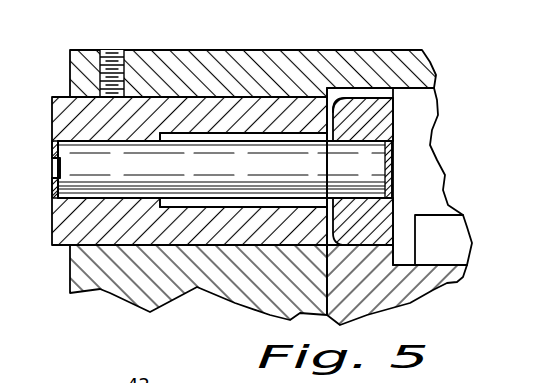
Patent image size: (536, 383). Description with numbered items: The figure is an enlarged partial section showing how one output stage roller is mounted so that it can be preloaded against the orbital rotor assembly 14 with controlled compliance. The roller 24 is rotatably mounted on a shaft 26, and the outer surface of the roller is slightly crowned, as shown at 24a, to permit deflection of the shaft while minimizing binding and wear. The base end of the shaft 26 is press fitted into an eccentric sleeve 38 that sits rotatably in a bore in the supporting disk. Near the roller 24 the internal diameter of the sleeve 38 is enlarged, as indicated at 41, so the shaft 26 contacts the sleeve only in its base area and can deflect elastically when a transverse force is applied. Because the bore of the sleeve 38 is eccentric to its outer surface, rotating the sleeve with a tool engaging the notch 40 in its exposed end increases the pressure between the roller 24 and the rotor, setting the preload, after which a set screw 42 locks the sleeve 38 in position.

The orbital rotor assembly 14 is at (403, 297).
The roller 24 is at (393, 118).
The crowned surface of roller 24a is at (385, 97).
The shaft 26 is at (393, 158).
The eccentric sleeve 38 is at (60, 118).
The notch 40 is at (57, 175).
The enlarged internal diameter 41 is at (247, 128).
The set screw 42 is at (117, 50).